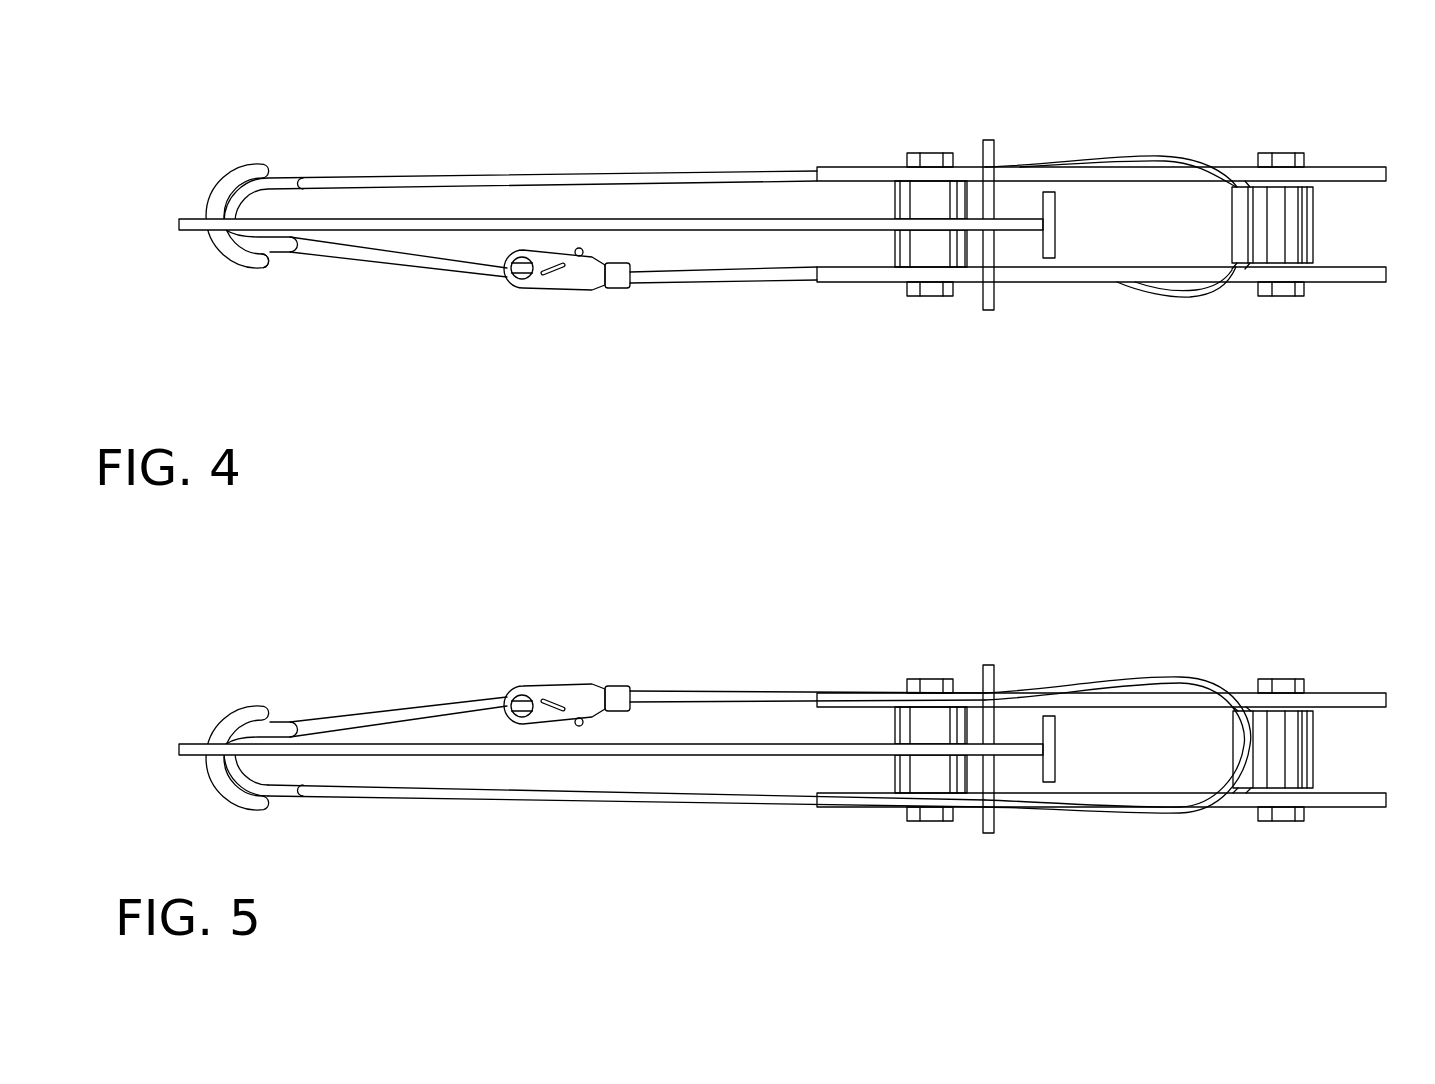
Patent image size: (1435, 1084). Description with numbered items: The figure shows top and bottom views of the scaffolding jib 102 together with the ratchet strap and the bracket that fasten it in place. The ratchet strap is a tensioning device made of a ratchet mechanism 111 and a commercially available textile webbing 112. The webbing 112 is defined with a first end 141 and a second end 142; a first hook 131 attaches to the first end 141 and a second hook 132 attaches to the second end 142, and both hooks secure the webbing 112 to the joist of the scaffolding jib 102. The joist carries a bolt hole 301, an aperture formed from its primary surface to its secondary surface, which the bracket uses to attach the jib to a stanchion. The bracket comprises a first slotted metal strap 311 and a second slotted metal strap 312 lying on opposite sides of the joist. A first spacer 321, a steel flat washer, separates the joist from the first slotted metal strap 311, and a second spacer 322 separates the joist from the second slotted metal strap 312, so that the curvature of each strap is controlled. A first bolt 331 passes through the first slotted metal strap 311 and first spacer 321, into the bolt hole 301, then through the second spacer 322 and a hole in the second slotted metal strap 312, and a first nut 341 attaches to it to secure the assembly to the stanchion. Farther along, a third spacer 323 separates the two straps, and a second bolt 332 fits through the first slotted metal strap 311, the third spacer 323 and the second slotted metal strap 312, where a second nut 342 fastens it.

In FIG. 5, the scaffolding jib 102 is at (650, 757).
In FIG. 4, the ratchet mechanism 111 is at (540, 291).
In FIG. 5, the ratchet mechanism 111 is at (557, 684).
In FIG. 4, the webbing 112 is at (680, 284).
In FIG. 4, the first hook 131 is at (240, 165).
In FIG. 4, the second hook 132 is at (236, 264).
In FIG. 4, the first end 141 is at (302, 253).
In FIG. 4, the second end 142 is at (330, 178).
In FIG. 4, the bolt hole 301 is at (1112, 174).
In FIG. 5, the first slotted metal strap 311 is at (1380, 807).
In FIG. 4, the second slotted metal strap 312 is at (1110, 276).
In FIG. 5, the second slotted metal strap 312 is at (1380, 693).
In FIG. 4, the first spacer 321 is at (920, 204).
In FIG. 5, the first spacer 321 is at (920, 772).
In FIG. 4, the second spacer 322 is at (920, 244).
In FIG. 5, the second spacer 322 is at (915, 727).
In FIG. 5, the third spacer 323 is at (1305, 752).
In FIG. 4, the first bolt 331 is at (925, 153).
In FIG. 5, the first bolt 331 is at (920, 821).
In FIG. 5, the second bolt 332 is at (1268, 821).
In FIG. 4, the first nut 341 is at (918, 297).
In FIG. 5, the first nut 341 is at (930, 679).
In FIG. 4, the second nut 342 is at (1282, 297).
In FIG. 5, the second nut 342 is at (1272, 679).